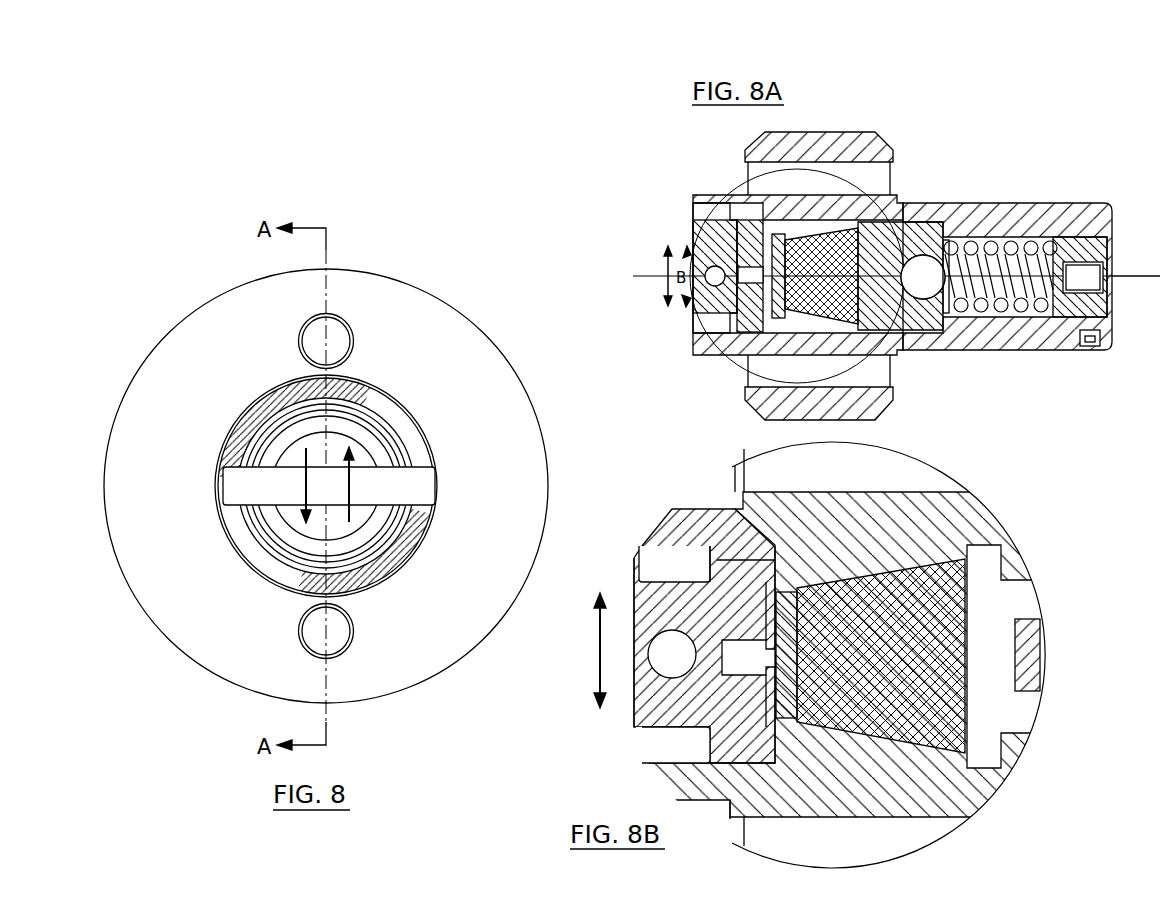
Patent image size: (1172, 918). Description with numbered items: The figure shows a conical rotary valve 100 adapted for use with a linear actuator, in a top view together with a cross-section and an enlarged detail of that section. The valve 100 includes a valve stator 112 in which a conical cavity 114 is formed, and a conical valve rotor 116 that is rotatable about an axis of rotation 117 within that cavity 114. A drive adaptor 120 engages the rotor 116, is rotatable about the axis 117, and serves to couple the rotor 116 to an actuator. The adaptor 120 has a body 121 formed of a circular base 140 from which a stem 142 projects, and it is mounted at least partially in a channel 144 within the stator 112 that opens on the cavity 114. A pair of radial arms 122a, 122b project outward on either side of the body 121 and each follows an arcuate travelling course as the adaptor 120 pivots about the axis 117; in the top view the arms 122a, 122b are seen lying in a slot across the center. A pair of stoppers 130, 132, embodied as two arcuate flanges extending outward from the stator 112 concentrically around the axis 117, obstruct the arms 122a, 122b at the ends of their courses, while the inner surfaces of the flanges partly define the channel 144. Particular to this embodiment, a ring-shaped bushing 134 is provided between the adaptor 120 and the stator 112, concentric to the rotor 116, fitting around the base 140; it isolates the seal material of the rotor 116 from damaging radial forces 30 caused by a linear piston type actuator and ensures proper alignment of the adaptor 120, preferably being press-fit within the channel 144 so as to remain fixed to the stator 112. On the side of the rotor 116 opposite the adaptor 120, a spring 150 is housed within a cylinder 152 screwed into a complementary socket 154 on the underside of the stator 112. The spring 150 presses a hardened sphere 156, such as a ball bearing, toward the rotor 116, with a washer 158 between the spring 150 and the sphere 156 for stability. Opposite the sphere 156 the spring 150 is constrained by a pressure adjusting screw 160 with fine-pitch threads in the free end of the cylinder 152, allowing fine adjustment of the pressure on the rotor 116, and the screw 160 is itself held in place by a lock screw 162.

In FIG. 8, the conical rotary valve 100 is at (408, 212).
In FIG. 8A, the conical rotary valve 100 is at (970, 146).
In FIG. 8A, the valve stator 112 is at (888, 343).
In FIG. 8B, the valve stator 112 is at (969, 516).
In FIG. 8B, the conical cavity 114 is at (996, 551).
In FIG. 8A, the conical valve rotor 116 is at (837, 247).
In FIG. 8B, the conical valve rotor 116 is at (943, 655).
In FIG. 8A, the axis of rotation 117 is at (1133, 276).
In FIG. 8, the drive adaptor 120 is at (380, 538).
In FIG. 8A, the drive adaptor 120 is at (678, 326).
In FIG. 8B, the drive adaptor 120 is at (656, 742).
In FIG. 8A, the body 121 is at (717, 245).
In FIG. 8B, the body 121 is at (661, 719).
In FIG. 8, the radial arm 122a is at (232, 478).
In FIG. 8, the radial arm 122b is at (349, 477).
In FIG. 8, the stopper 130 is at (257, 408).
In FIG. 8, the stopper 132 is at (386, 592).
In FIG. 8, the bushing 134 is at (375, 425).
In FIG. 8A, the bushing 134 is at (745, 223).
In FIG. 8B, the bushing 134 is at (716, 547).
In FIG. 8B, the circular base 140 is at (723, 571).
In FIG. 8B, the stem 142 is at (634, 589).
In FIG. 8B, the channel 144 is at (656, 561).
In FIG. 8A, the spring 150 is at (1012, 246).
In FIG. 8A, the cylinder 152 is at (1068, 203).
In FIG. 8A, the socket 154 is at (928, 347).
In FIG. 8A, the hardened sphere 156 is at (930, 267).
In FIG. 8A, the washer 158 is at (946, 310).
In FIG. 8A, the pressure adjusting screw 160 is at (1097, 305).
In FIG. 8A, the lock screw 162 is at (1089, 344).
In FIG. 8, the radial forces 30 is at (418, 483).